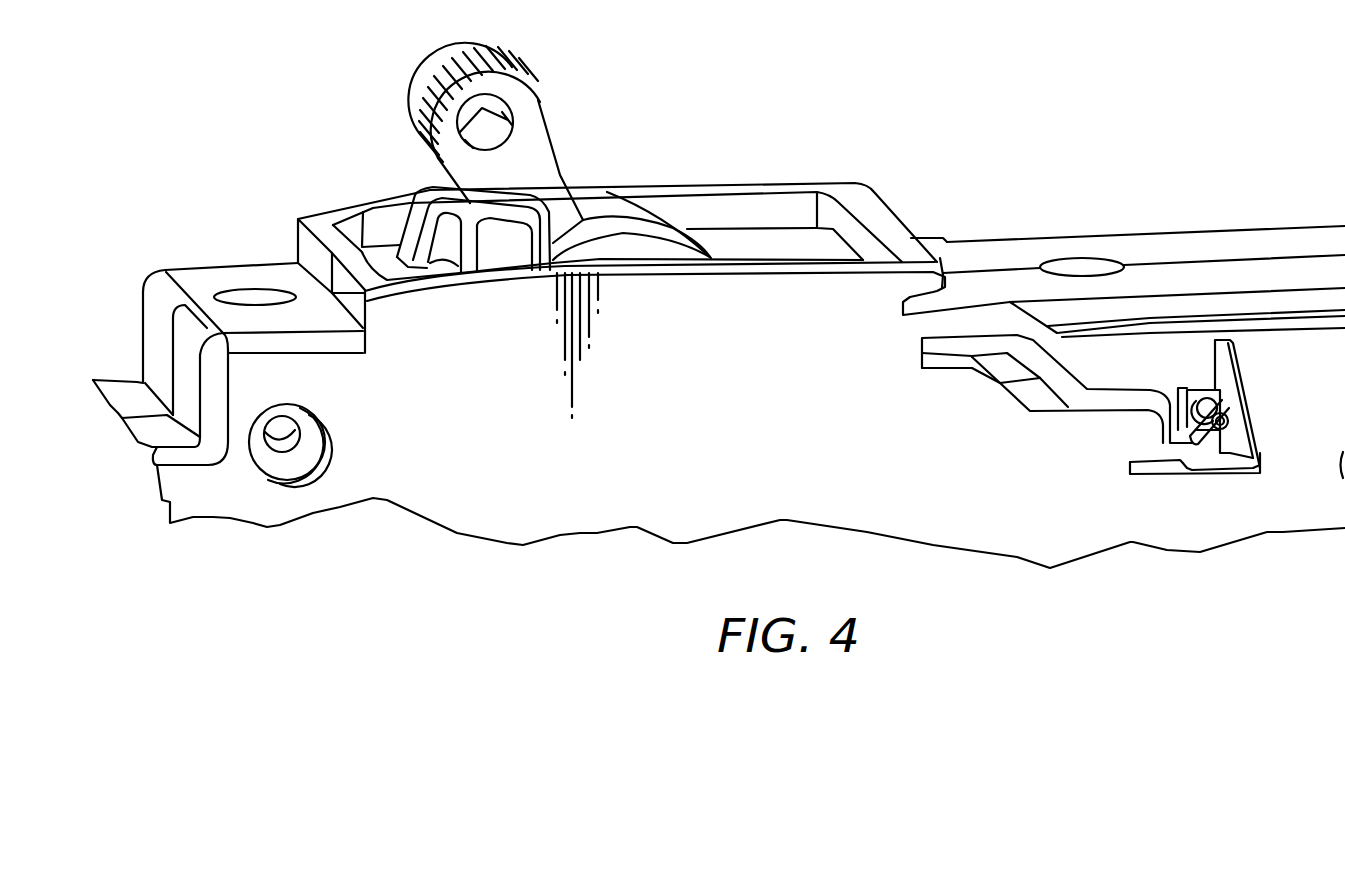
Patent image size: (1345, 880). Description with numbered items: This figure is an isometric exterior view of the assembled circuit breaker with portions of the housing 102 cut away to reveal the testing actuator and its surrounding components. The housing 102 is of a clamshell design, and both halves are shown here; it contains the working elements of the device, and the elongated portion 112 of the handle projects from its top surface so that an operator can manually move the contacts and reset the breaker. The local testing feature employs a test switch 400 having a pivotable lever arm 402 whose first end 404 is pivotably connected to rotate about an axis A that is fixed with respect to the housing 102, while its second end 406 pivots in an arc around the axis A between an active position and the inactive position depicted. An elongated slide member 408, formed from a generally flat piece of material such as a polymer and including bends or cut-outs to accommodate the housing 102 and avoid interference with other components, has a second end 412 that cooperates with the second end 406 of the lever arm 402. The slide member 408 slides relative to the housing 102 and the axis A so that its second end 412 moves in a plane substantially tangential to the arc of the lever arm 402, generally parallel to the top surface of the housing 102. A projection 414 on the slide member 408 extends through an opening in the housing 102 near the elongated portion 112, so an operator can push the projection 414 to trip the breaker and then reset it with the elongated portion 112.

The housing 102 is at (863, 233).
The elongated portion 112 is at (520, 100).
The projection 414 is at (428, 192).
The slide member 408 is at (1043, 353).
The second end 412 is at (1173, 440).
The second end 406 is at (1180, 460).
The first end 404 is at (1197, 440).
The test switch 400 is at (1203, 400).
The pivotable lever arm 402 is at (1207, 425).
The axis A is at (1228, 432).